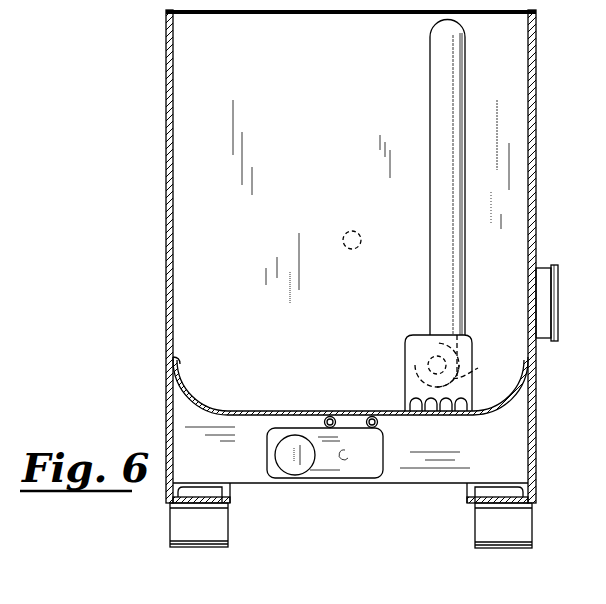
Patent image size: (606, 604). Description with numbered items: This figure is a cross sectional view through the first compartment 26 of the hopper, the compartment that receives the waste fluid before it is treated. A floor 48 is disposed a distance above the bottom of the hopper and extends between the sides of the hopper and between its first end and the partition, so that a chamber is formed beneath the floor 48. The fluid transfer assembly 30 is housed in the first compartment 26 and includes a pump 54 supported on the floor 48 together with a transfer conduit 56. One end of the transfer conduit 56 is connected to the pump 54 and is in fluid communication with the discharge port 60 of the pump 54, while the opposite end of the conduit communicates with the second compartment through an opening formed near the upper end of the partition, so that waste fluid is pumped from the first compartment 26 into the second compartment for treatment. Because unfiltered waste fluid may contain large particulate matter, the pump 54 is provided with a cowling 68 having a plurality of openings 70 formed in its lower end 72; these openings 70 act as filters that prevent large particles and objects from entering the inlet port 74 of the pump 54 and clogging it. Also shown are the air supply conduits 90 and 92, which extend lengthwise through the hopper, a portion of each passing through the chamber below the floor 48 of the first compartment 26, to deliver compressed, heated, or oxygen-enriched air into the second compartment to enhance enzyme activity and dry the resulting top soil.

The first compartment 26 is at (196, 213).
The fluid transfer assembly 30 is at (427, 83).
The floor 48 is at (278, 412).
The pump 54 is at (453, 378).
The transfer conduit 56 is at (430, 190).
The discharge port 60 is at (437, 345).
The cowling 68 is at (470, 337).
The openings 70 is at (418, 408).
The lower end 72 is at (404, 387).
The inlet port 74 is at (422, 363).
The air supply conduit 90 is at (326, 418).
The air supply conduit 92 is at (380, 424).